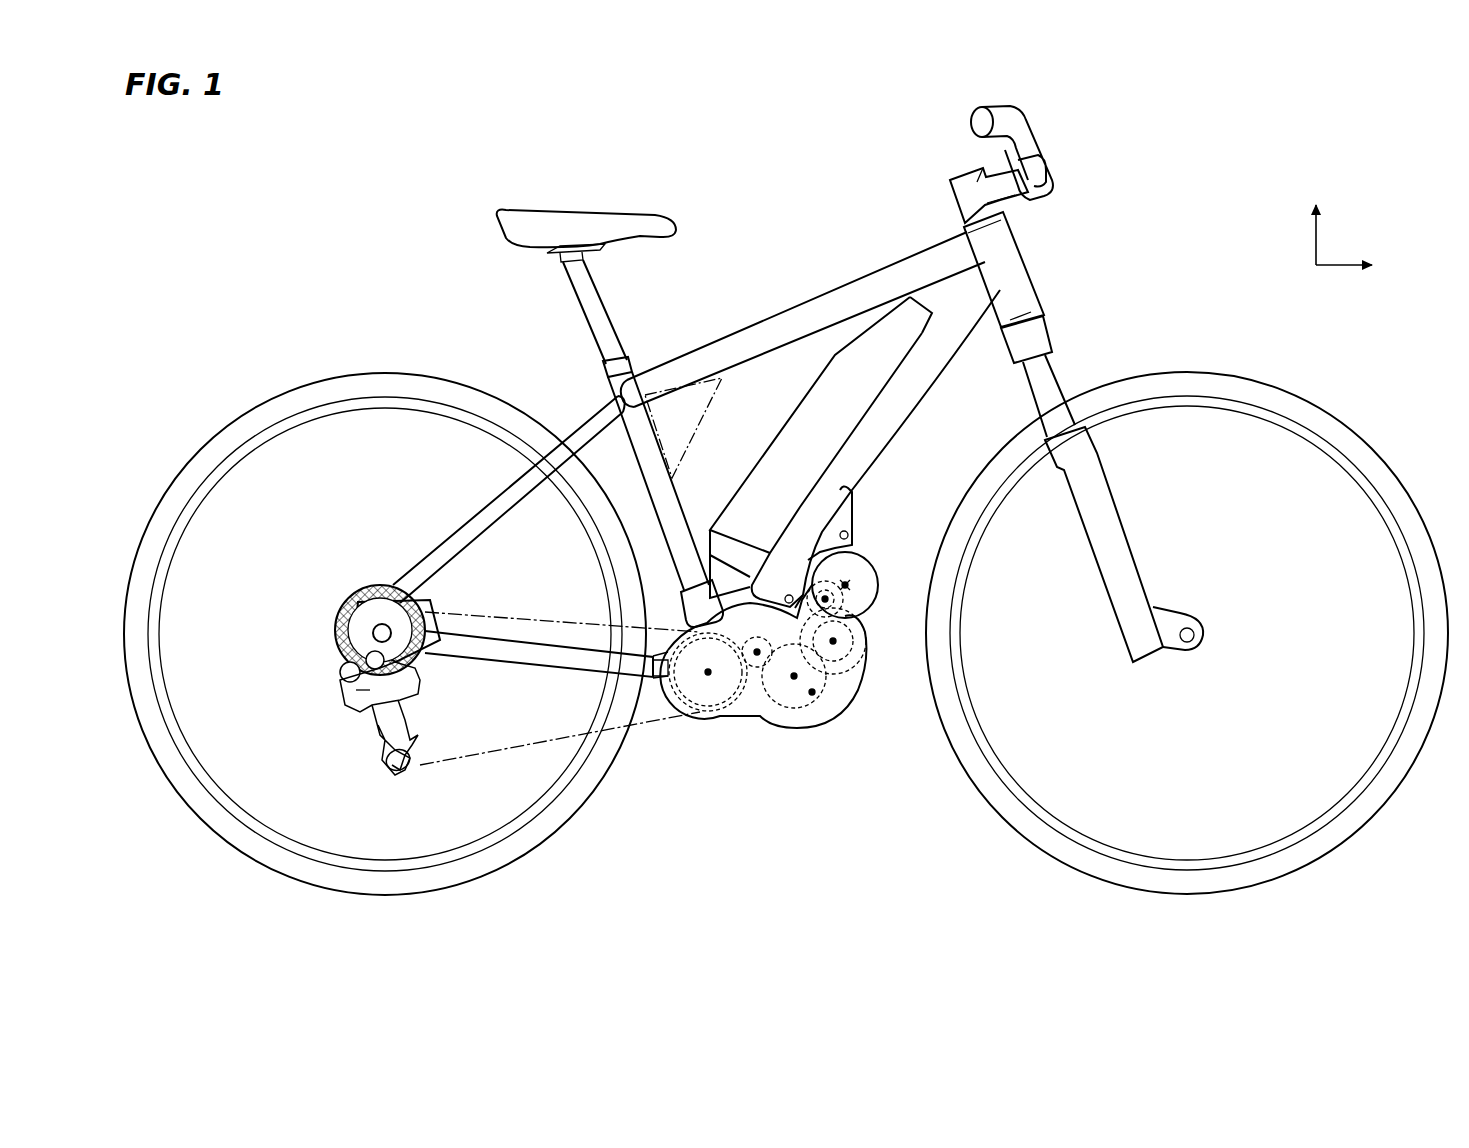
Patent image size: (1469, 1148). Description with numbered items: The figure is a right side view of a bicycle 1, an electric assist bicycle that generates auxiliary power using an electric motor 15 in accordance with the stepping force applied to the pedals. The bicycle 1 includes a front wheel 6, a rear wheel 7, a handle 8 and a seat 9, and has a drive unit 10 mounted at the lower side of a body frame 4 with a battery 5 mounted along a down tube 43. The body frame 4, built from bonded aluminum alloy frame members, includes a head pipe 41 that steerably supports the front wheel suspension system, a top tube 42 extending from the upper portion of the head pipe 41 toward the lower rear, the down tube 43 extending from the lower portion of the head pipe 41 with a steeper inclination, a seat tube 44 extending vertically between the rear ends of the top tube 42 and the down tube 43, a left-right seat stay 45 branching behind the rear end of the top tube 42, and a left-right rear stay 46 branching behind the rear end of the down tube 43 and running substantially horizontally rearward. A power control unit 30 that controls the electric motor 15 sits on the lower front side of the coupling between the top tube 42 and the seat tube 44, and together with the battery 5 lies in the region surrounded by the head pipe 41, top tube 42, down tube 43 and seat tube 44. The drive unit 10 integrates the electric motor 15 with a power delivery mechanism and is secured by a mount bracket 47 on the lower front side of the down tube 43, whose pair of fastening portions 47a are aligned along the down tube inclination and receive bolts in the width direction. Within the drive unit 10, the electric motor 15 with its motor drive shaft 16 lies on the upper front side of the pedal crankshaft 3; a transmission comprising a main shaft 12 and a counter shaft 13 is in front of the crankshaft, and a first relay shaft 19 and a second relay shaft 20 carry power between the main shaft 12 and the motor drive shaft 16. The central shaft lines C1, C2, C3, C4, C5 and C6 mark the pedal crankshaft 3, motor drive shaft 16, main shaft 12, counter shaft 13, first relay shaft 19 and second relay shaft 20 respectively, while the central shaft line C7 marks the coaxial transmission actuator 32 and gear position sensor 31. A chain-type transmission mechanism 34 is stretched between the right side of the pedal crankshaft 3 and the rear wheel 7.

The bicycle 1 is at (1182, 130).
The pedal crankshaft 3 is at (694, 731).
The body frame 4 is at (1028, 254).
The battery 5 is at (833, 388).
The front wheel 6 is at (1352, 440).
The rear wheel 7 is at (258, 406).
The handle 8 is at (1035, 132).
The seat 9 is at (553, 214).
The drive unit 10 is at (840, 718).
The main shaft 12 is at (780, 789).
The counter shaft 13 is at (739, 729).
The electric motor 15 is at (878, 600).
The motor drive shaft 16 is at (845, 585).
The first relay shaft 19 is at (703, 428).
The second relay shaft 20 is at (866, 672).
The power control unit 30 is at (685, 404).
The gear position sensor 31 is at (861, 798).
The transmission actuator 32 is at (812, 692).
The chain-type transmission mechanism 34 is at (455, 765).
The head pipe 41 is at (1032, 300).
The top tube 42 is at (862, 284).
The down tube 43 is at (912, 398).
The seat tube 44 is at (640, 455).
The seat stay 45 is at (458, 540).
The rear stay 46 is at (520, 660).
The mount bracket 47 is at (852, 500).
The fastening portions 47a is at (782, 594).
The central shaft line of the pedal crankshaft C1 is at (708, 672).
The central shaft line of the motor drive shaft C2 is at (845, 585).
The central shaft line of the main shaft C3 is at (794, 676).
The central shaft line of the counter shaft C4 is at (757, 652).
The central shaft line of the first relay shaft C5 is at (825, 600).
The central shaft line of the second relay shaft C6 is at (833, 641).
The central shaft line of the transmission actuator C7 is at (812, 692).